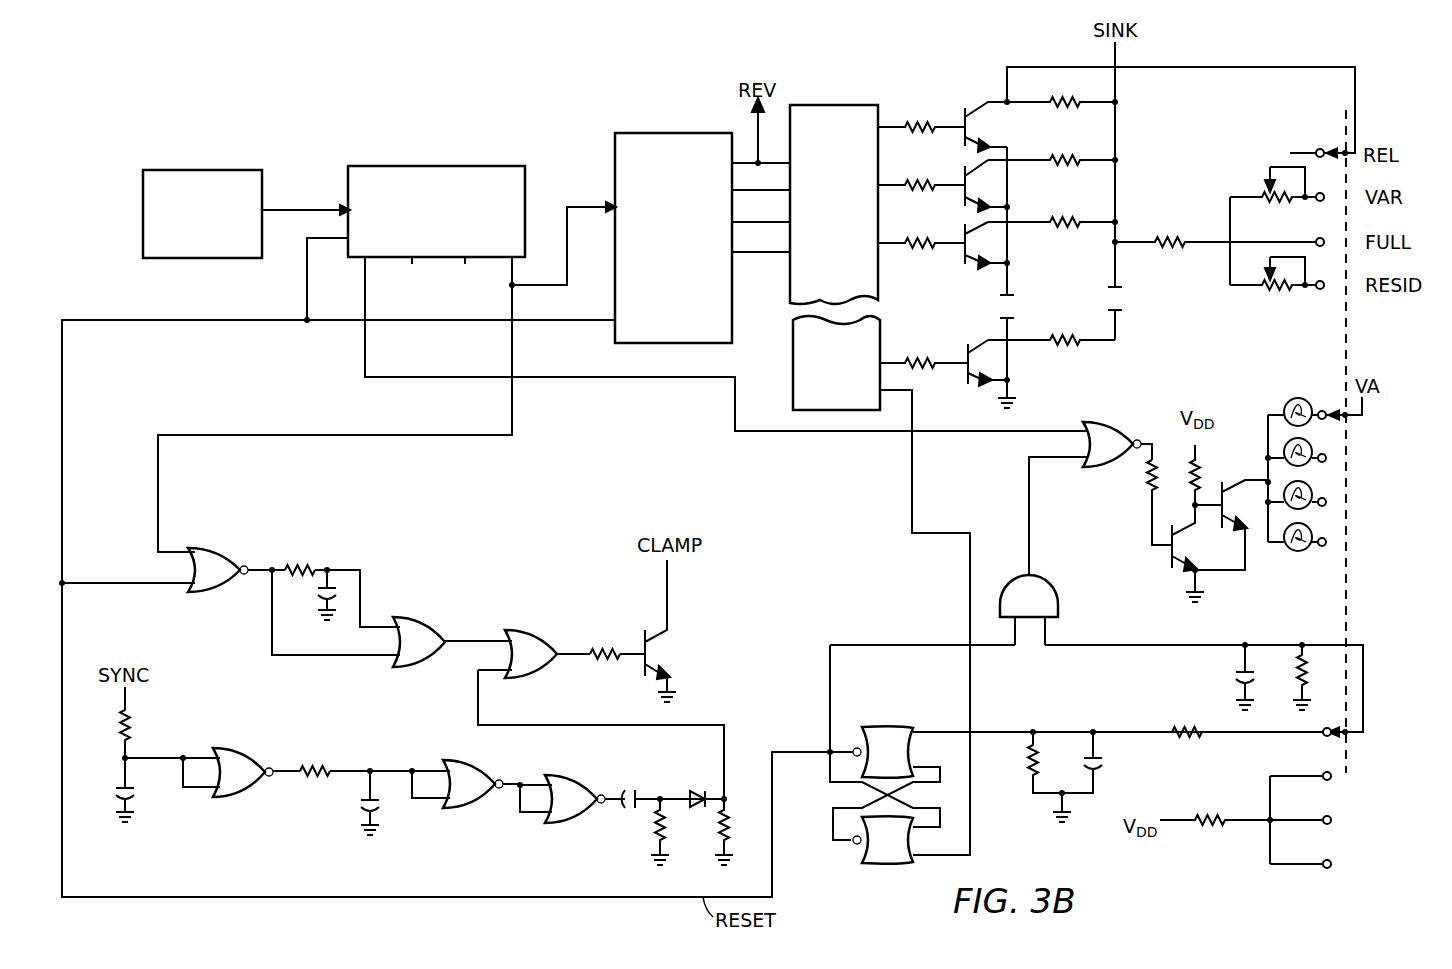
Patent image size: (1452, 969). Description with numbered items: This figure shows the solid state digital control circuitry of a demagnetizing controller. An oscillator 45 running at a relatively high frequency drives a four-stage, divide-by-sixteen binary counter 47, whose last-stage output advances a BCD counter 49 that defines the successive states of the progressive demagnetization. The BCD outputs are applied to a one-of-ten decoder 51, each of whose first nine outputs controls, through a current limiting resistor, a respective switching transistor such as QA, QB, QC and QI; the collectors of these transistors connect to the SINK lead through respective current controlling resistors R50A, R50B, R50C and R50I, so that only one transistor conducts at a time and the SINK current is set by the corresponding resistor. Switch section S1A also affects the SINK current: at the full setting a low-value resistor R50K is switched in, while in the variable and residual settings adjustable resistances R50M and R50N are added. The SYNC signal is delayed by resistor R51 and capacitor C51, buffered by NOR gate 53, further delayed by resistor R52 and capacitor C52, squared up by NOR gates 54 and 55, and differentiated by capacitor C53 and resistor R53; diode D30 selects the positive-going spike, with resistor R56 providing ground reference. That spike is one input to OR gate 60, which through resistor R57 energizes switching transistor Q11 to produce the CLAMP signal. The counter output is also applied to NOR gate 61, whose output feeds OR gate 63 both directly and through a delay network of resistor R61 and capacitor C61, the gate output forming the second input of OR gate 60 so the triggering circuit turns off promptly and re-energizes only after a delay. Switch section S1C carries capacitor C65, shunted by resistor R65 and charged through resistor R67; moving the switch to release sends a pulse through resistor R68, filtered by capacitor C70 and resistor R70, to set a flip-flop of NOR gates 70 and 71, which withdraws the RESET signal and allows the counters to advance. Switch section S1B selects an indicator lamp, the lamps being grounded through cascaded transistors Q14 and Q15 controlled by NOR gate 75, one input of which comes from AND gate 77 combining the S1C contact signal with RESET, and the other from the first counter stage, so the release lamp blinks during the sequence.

The oscillator 45 is at (215, 170).
The four-stage binary counter 47 is at (485, 166).
The BCD counter 49 is at (665, 133).
The one-of-ten decoder 51 is at (845, 105).
The NOR gate 53 is at (243, 758).
The NOR gate 54 is at (474, 768).
The NOR gate 55 is at (565, 779).
The OR gate 60 is at (543, 675).
The NOR gate 61 is at (220, 592).
The OR gate 63 is at (422, 667).
The NOR gate 70 is at (888, 726).
The NOR gate 71 is at (876, 864).
The NOR gate 75 is at (1114, 468).
The AND gate 77 is at (1060, 600).
The switching transistor QA is at (962, 118).
The switching transistor QB is at (960, 178).
The switching transistor QC is at (960, 240).
The switching transistor QI is at (962, 358).
The current controlling resistor R50A is at (1062, 104).
The current controlling resistor R50B is at (1061, 163).
The current controlling resistor R50C is at (1061, 225).
The current controlling resistor R50I is at (1060, 336).
The resistor R50K is at (1176, 229).
The adjustable resistance R50M is at (1268, 193).
The adjustable resistance R50N is at (1268, 292).
The switching section S1A is at (1238, 144).
The switching section S1B is at (1288, 560).
The switching section S1C is at (1250, 868).
The current-switching transistor Q14 is at (1168, 560).
The current-switching transistor Q15 is at (1222, 510).
The switching transistor Q11 is at (655, 664).
The capacitor C65 is at (1233, 676).
The resistor R65 is at (1306, 684).
The resistor R68 is at (1193, 740).
The capacitor C70 is at (1103, 763).
The resistor R70 is at (1030, 773).
The resistor R67 is at (1207, 816).
The resistor R61 is at (300, 565).
The capacitor C61 is at (316, 600).
The resistor R57 is at (604, 662).
The resistor R51 is at (131, 733).
The capacitor C51 is at (136, 800).
The resistor R52 is at (320, 755).
The capacitor C52 is at (356, 822).
The capacitor C53 is at (628, 782).
The diode D30 is at (698, 791).
The resistor R53 is at (655, 826).
The resistor R56 is at (717, 828).